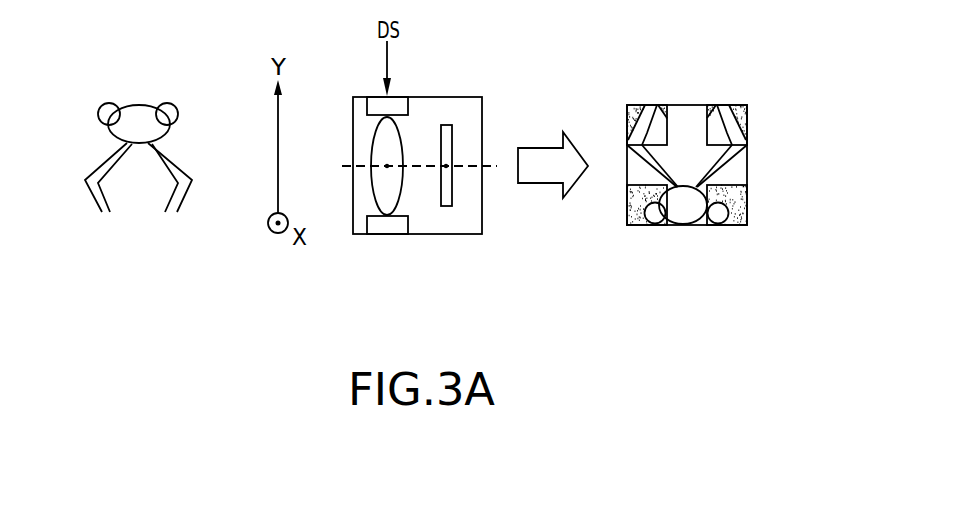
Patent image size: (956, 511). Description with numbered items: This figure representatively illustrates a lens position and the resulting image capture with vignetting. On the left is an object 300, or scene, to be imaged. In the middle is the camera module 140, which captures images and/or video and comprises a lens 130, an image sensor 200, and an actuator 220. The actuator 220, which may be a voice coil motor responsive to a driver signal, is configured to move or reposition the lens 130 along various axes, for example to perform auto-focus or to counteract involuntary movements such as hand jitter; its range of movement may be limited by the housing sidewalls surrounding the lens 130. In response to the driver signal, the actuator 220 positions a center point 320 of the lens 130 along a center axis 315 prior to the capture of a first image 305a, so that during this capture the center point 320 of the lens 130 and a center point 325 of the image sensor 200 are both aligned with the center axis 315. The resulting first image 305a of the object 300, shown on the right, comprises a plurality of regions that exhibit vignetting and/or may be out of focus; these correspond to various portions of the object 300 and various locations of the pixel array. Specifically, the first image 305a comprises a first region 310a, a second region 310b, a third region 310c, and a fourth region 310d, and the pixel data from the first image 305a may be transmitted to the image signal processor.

The object 300 is at (96, 70).
The camera module 140 is at (452, 234).
The actuator 220 is at (375, 107).
The lens 130 is at (405, 120).
The center axis 315 is at (360, 163).
The center point of the lens 320 is at (387, 166).
The image sensor 200 is at (452, 140).
The center point of the image sensor 325 is at (446, 166).
The first image 305a is at (704, 150).
The first region 310a is at (637, 102).
The second region 310b is at (747, 120).
The third region 310c is at (637, 223).
The fourth region 310d is at (747, 208).